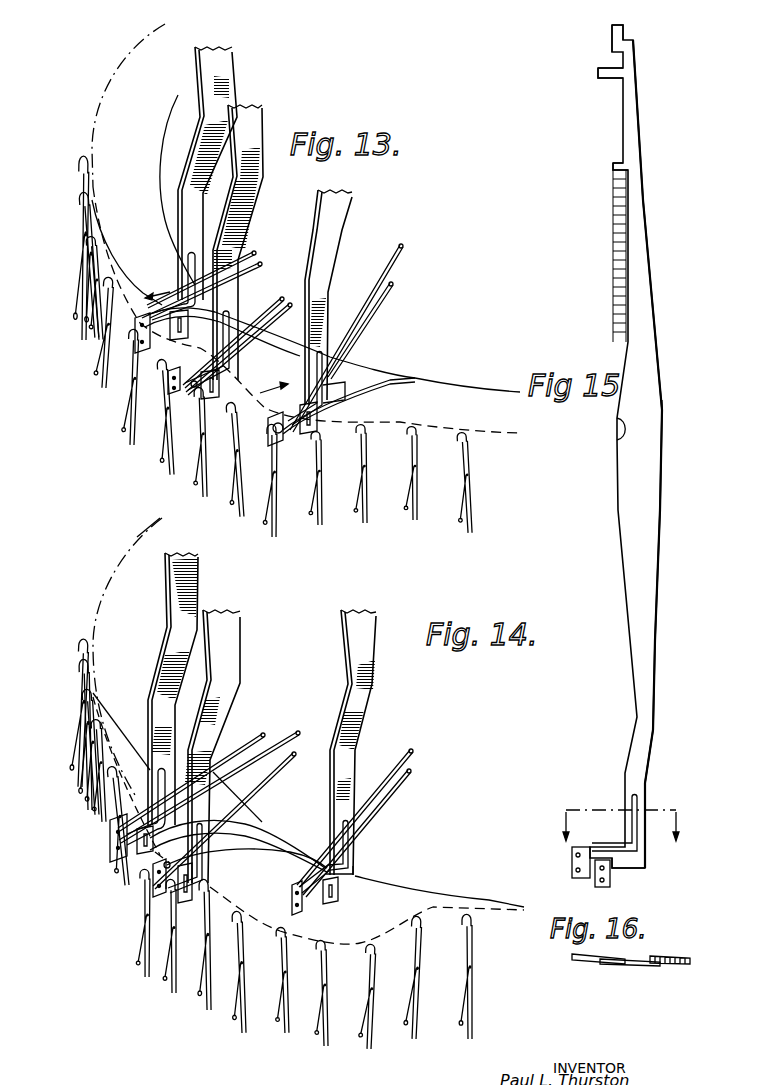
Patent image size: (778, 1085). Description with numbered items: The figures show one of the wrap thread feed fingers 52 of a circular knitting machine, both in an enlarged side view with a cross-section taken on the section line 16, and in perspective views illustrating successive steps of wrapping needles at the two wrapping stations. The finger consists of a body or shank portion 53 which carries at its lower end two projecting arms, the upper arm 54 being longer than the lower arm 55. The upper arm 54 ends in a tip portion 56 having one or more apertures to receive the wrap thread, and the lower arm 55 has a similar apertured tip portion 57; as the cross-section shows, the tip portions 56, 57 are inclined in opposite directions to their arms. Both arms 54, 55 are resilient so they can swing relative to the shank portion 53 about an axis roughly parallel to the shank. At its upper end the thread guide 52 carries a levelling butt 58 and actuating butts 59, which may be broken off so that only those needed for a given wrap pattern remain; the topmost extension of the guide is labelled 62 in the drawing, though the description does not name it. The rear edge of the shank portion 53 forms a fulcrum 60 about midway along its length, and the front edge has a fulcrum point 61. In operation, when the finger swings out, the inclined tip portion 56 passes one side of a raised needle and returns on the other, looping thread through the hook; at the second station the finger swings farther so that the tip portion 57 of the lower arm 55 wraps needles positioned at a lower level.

In FIG. 15, the section line 16— 16 is at (618, 818).
In FIG. 15, the wrap thread feed finger 52 is at (660, 442).
In FIG. 13, the body or shank portion 53 is at (350, 213).
In FIG. 14, the body or shank portion 53 is at (372, 690).
In FIG. 15, the body or shank portion 53 is at (652, 570).
In FIG. 13, the upper arm 54 is at (300, 395).
In FIG. 14, the upper arm 54 is at (340, 845).
In FIG. 15, the upper arm 54 is at (592, 850).
In FIG. 13, the lower arm 55 is at (330, 390).
In FIG. 14, the lower arm 55 is at (354, 871).
In FIG. 15, the lower arm 55 is at (628, 867).
In FIG. 16, the lower arm 55 is at (652, 964).
In FIG. 13, the tip portion 56 is at (268, 435).
In FIG. 14, the tip portion 56 is at (292, 897).
In FIG. 15, the tip portion 56 is at (573, 867).
In FIG. 16, the tip portion 56 is at (580, 963).
In FIG. 13, the apertured tip portion 57 is at (300, 432).
In FIG. 14, the apertured tip portion 57 is at (336, 900).
In FIG. 15, the apertured tip portion 57 is at (610, 882).
In FIG. 16, the apertured tip portion 57 is at (622, 970).
In FIG. 15, the levelling butt 58 is at (613, 78).
In FIG. 15, the actuating butts 59 is at (613, 165).
In FIG. 15, the fulcrum 60 is at (668, 406).
In FIG. 15, the fulcrum point 61 is at (615, 430).
In FIG. 15, the upper butt 62 is at (612, 34).